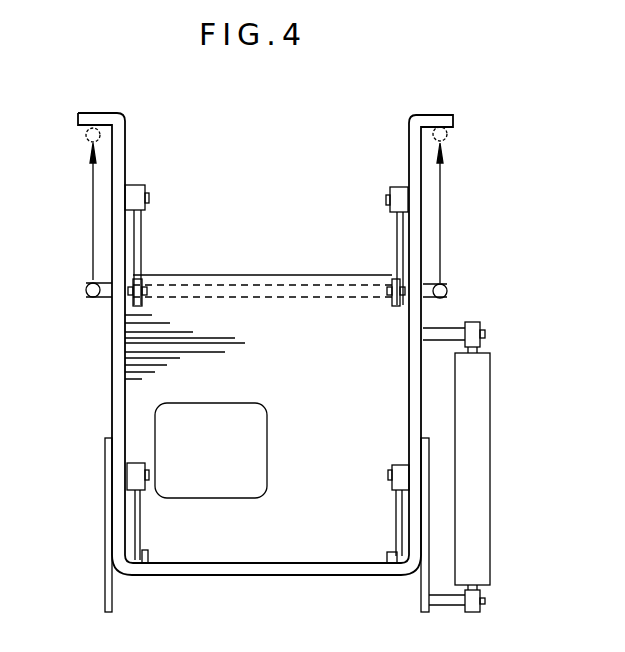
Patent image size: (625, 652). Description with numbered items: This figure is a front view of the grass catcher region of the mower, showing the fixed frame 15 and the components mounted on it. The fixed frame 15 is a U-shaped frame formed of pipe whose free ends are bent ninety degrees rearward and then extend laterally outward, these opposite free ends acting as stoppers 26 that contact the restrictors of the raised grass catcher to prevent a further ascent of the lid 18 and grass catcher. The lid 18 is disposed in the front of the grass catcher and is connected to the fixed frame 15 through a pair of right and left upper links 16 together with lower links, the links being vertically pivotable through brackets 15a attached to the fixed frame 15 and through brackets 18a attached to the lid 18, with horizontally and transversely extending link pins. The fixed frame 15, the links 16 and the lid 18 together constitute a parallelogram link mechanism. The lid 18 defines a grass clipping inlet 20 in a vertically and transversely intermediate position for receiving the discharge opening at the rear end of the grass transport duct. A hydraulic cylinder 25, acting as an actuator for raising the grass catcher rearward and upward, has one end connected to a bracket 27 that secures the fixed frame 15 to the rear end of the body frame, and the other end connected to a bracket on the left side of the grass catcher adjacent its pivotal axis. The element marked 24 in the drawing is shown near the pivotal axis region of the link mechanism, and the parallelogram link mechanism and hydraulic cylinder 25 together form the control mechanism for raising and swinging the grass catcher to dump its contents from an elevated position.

The fixed frame 15 is at (212, 570).
The brackets 15a is at (138, 188).
The upper links 16 is at (142, 232).
The lid 18 is at (298, 547).
The brackets 18a is at (145, 303).
The grass clipping inlet 20 is at (216, 422).
The bar 24 is at (86, 292).
The hydraulic cylinder 25 is at (478, 530).
The stoppers 26 is at (97, 118).
The bracket 27 is at (422, 582).